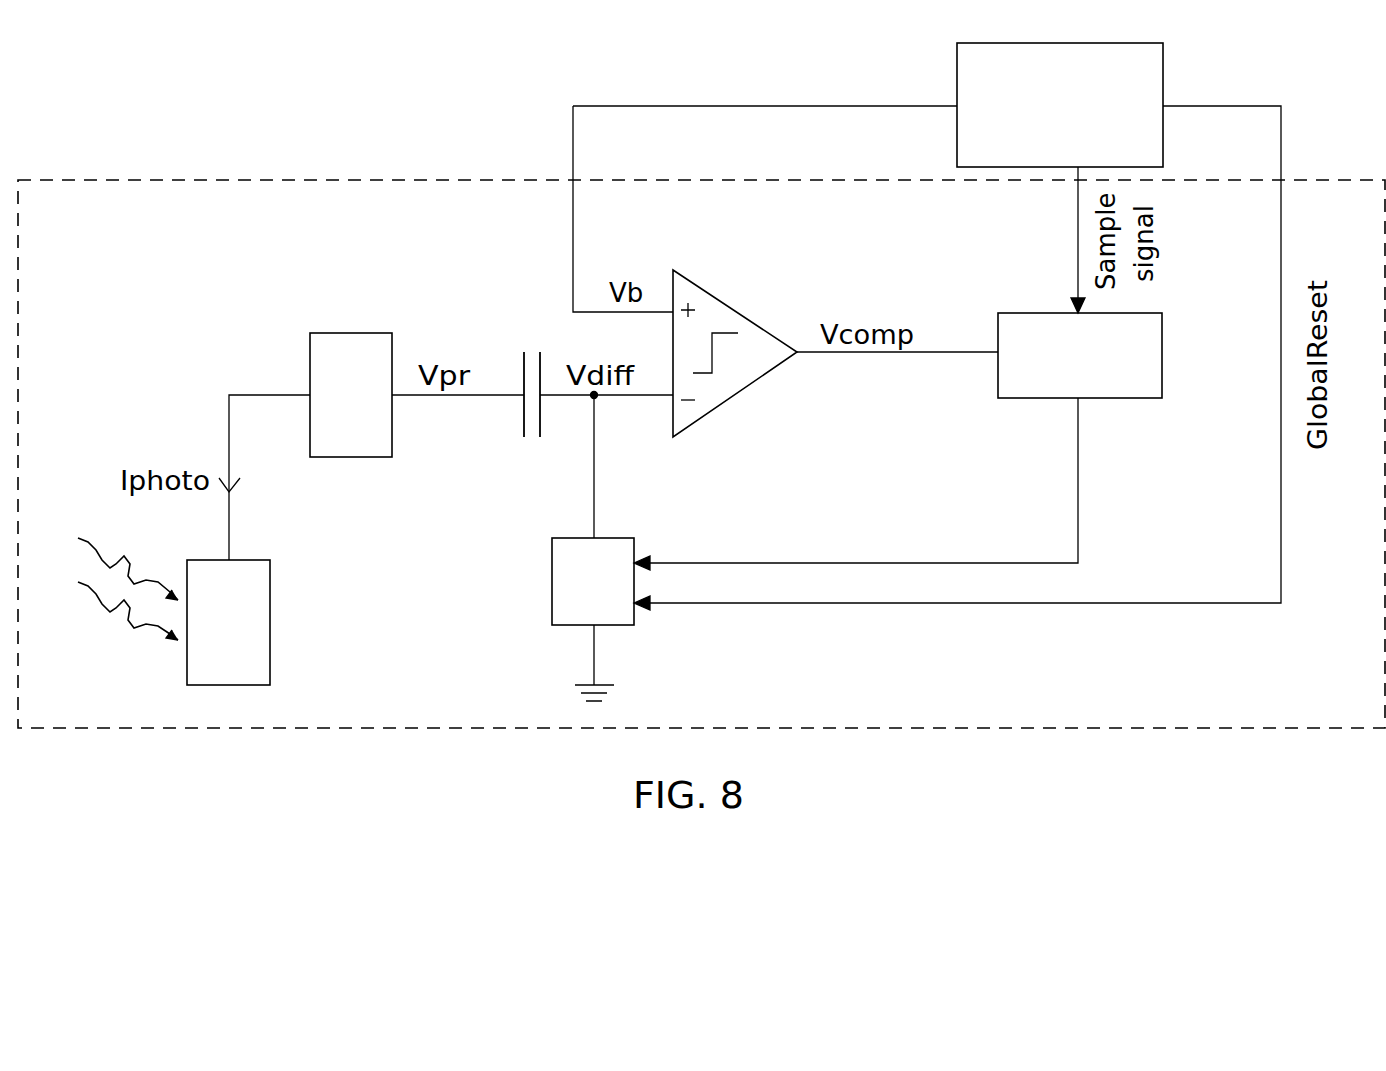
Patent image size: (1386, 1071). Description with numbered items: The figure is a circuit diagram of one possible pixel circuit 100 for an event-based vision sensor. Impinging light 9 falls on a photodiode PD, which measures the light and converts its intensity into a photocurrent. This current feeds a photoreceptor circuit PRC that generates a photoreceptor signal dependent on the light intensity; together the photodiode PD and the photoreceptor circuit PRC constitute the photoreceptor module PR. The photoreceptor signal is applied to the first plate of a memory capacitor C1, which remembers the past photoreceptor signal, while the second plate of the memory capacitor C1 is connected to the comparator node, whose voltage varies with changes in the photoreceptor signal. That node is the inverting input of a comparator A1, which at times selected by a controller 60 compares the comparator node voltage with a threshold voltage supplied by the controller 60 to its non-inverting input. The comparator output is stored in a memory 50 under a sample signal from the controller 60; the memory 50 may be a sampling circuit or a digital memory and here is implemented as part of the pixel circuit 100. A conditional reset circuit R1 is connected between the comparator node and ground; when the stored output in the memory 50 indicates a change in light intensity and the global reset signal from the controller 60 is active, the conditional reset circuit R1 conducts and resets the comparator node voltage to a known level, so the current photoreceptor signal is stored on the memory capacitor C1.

The pixel circuit 100 is at (347, 180).
The controller 60 is at (1060, 105).
The memory 50 is at (1080, 355).
The impinging light 9 is at (134, 628).
The photodiode PD is at (228, 622).
The photoreceptor circuit PRC is at (351, 395).
The memory capacitor C1 is at (522, 417).
The comparator A1 is at (766, 272).
The conditional reset circuit R1 is at (551, 581).
The photoreceptor module PR is at (238, 352).